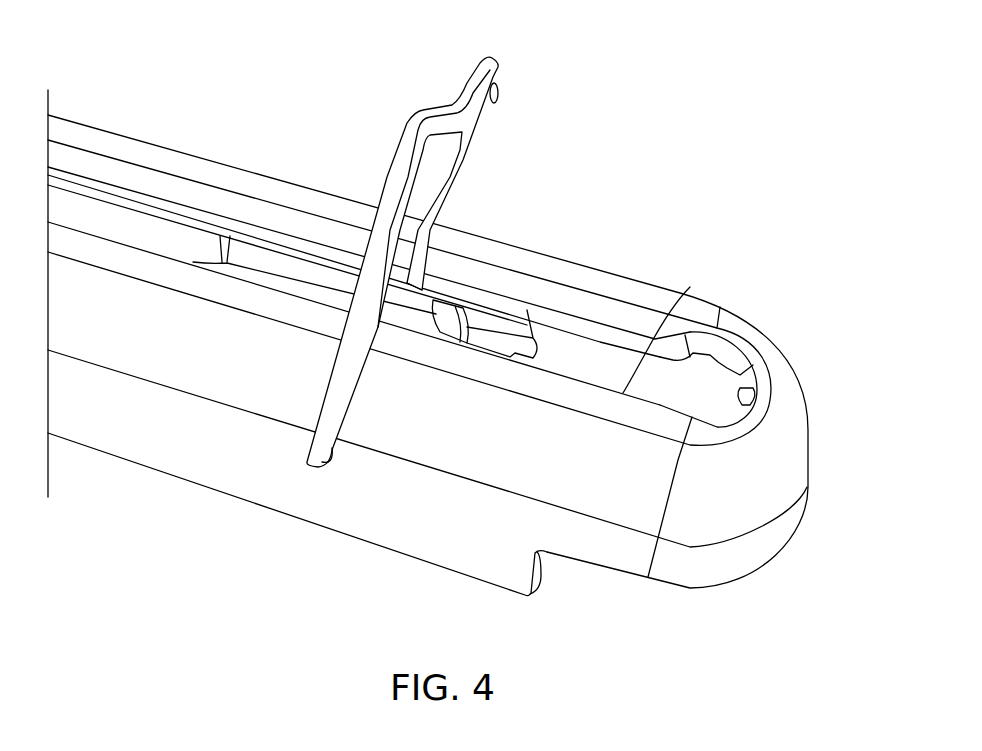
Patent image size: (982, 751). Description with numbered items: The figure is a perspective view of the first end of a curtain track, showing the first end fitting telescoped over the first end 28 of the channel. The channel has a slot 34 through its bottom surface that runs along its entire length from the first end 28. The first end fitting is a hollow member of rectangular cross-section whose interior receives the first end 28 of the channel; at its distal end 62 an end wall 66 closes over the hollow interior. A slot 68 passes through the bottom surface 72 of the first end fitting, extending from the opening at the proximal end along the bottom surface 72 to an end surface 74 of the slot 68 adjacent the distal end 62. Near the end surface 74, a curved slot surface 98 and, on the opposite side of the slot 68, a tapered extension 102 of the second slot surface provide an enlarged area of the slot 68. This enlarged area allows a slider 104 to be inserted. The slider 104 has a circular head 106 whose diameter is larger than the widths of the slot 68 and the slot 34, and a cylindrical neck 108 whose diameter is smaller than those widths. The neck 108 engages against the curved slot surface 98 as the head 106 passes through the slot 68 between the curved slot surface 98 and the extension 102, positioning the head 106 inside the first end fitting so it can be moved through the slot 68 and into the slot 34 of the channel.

The first end of the channel 28 is at (228, 255).
The slot 34 is at (160, 207).
The distal end of the first end fitting 62 is at (790, 442).
The end wall 66 is at (778, 485).
The slot 68 is at (212, 213).
The bottom surface of the first end fitting 72 is at (482, 276).
The end surface of the slot 74 is at (766, 384).
The curved slot surface 98 is at (712, 342).
The extension of the second slot surface 102 is at (690, 287).
The slider 104 is at (441, 85).
The head 106 is at (470, 330).
The neck 108 is at (447, 235).